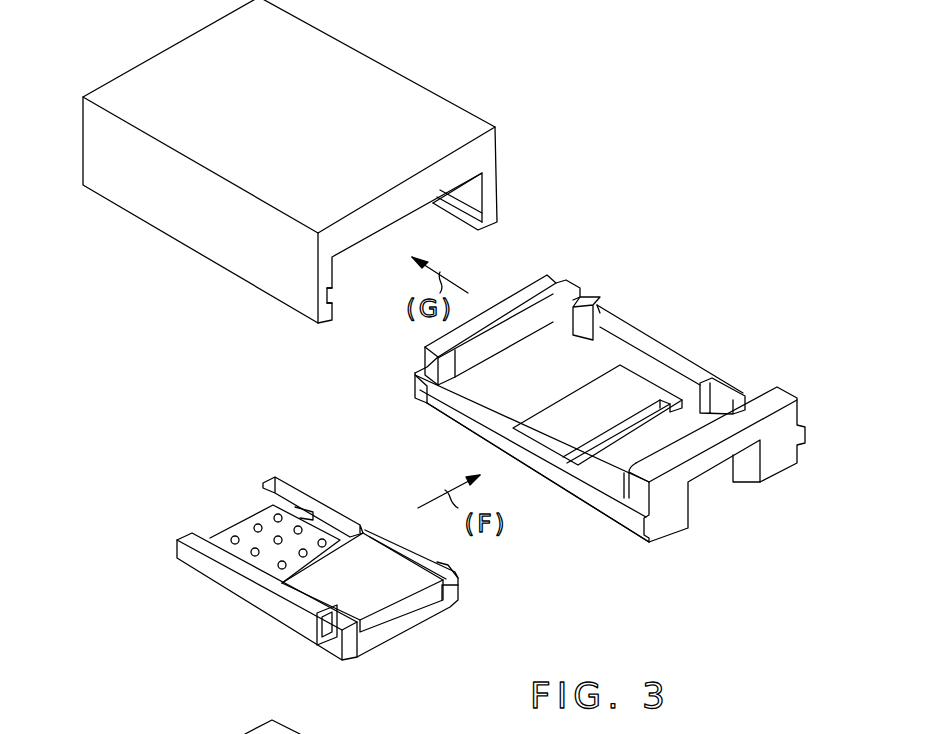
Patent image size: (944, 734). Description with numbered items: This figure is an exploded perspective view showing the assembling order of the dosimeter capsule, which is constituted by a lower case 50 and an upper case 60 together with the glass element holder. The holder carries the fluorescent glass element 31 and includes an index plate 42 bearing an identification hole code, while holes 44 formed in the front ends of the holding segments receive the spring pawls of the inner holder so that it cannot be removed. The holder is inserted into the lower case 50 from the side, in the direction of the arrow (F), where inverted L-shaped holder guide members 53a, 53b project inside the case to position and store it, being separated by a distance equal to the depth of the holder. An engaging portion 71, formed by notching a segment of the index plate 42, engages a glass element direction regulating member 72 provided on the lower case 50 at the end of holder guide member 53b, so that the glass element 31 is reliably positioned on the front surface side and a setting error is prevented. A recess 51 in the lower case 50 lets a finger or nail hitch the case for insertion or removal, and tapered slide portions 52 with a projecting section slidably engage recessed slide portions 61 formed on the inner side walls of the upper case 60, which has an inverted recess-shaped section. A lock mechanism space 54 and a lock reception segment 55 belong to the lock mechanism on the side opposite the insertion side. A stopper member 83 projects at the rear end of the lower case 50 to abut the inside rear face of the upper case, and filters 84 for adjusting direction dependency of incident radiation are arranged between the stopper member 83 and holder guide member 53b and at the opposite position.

The fluorescent glass element 31 is at (415, 600).
The index plate 42 is at (238, 522).
The hole 44 is at (322, 648).
The lower case 50 is at (582, 426).
The recess 51 is at (722, 495).
The slide portions 52 is at (627, 517).
The holder guide member 53a is at (740, 387).
The holder guide member 53b is at (560, 282).
The lock mechanism space 54 is at (600, 313).
The lock reception segment 55 is at (580, 285).
The upper case 60 is at (167, 248).
The recessed slide portions 61 is at (490, 207).
The engaging portion 71 is at (312, 500).
The glass element direction regulating member 72 is at (605, 330).
The stopper member 83 is at (415, 375).
The filters 84 is at (522, 295).